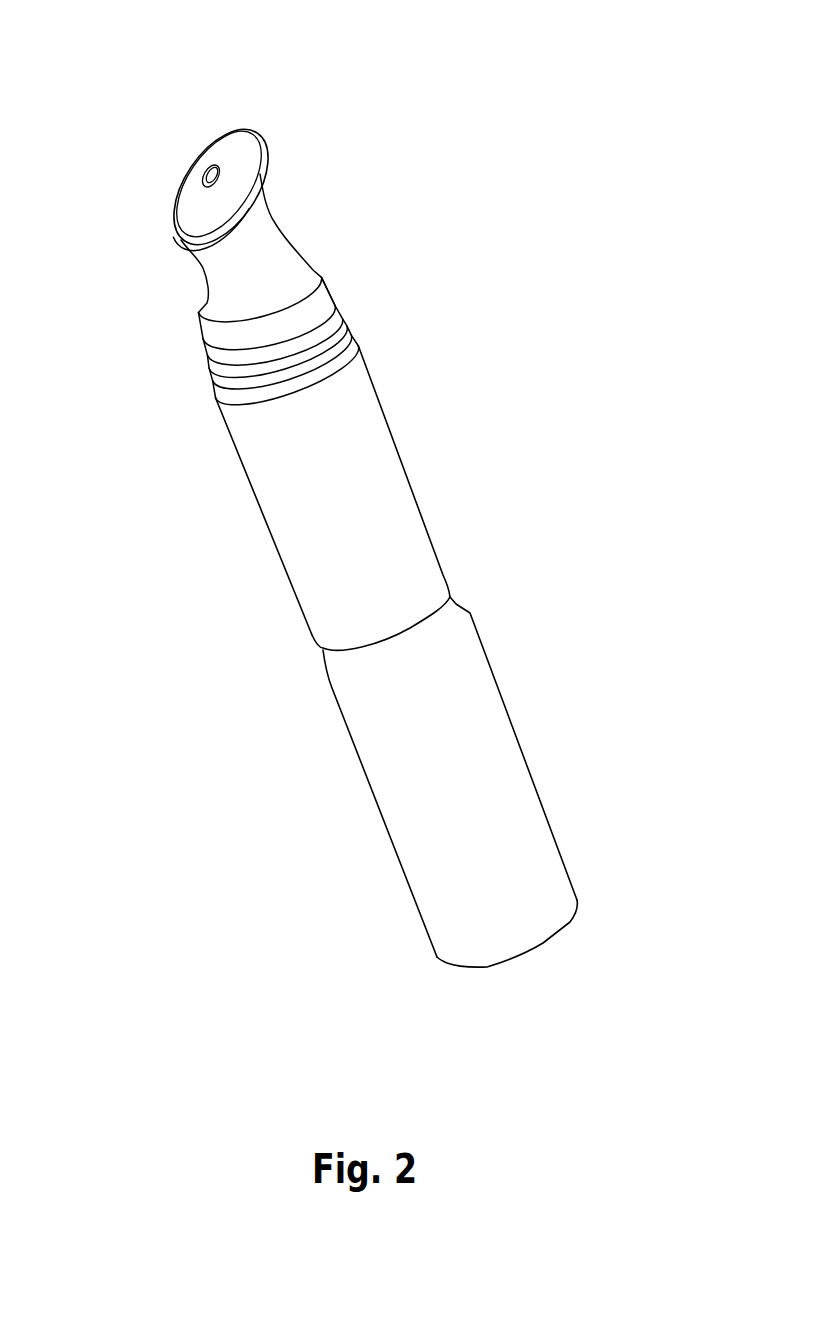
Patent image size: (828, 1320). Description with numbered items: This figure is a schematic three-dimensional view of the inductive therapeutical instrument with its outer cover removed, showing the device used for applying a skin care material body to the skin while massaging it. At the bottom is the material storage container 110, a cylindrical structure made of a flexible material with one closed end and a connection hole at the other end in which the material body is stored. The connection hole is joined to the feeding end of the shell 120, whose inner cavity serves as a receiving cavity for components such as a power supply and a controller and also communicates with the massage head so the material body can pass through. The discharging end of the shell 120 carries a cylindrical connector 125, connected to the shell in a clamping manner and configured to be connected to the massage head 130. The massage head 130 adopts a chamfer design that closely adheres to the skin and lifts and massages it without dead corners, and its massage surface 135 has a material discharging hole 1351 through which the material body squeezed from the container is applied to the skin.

The material storage container 110 is at (490, 767).
The shell 120 is at (390, 487).
The connector 125 is at (347, 343).
The massage head 130 is at (277, 268).
The massage surface 135 is at (232, 153).
The material discharging hole 1351 is at (205, 173).